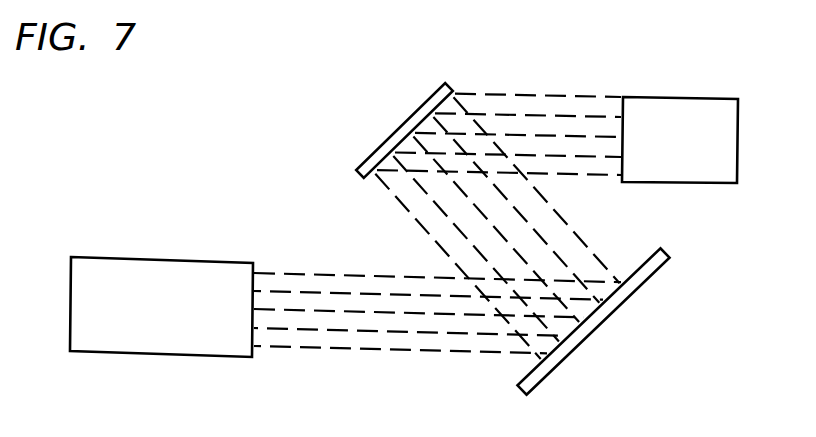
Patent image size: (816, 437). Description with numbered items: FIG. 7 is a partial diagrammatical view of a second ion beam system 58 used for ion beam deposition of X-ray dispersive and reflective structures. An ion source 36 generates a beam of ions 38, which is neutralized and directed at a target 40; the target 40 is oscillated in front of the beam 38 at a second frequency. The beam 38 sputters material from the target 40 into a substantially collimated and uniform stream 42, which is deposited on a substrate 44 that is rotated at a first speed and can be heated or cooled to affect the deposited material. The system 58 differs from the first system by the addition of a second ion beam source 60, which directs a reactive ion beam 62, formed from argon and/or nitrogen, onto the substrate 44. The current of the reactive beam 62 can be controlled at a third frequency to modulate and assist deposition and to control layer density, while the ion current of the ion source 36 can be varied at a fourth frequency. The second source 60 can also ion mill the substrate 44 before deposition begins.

The ion source 36 is at (144, 313).
The beam of ions 38 is at (405, 322).
The target 40 is at (600, 320).
The stream 42 is at (440, 198).
The substrate 44 is at (412, 118).
The second ion beam system 58 is at (408, 277).
The second ion beam source 60 is at (664, 148).
The ion beam 62 is at (542, 125).